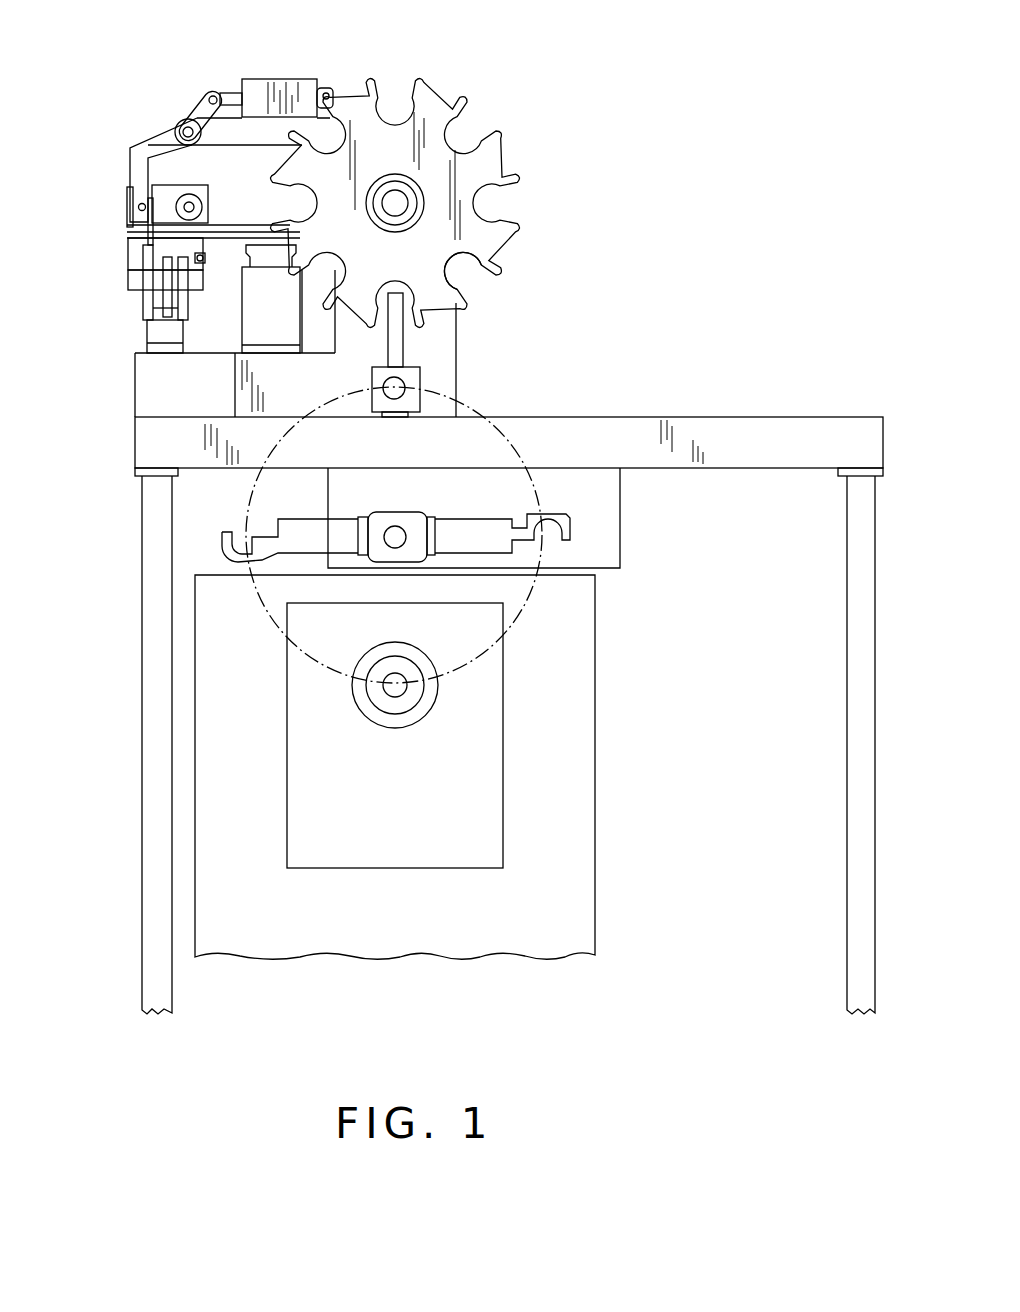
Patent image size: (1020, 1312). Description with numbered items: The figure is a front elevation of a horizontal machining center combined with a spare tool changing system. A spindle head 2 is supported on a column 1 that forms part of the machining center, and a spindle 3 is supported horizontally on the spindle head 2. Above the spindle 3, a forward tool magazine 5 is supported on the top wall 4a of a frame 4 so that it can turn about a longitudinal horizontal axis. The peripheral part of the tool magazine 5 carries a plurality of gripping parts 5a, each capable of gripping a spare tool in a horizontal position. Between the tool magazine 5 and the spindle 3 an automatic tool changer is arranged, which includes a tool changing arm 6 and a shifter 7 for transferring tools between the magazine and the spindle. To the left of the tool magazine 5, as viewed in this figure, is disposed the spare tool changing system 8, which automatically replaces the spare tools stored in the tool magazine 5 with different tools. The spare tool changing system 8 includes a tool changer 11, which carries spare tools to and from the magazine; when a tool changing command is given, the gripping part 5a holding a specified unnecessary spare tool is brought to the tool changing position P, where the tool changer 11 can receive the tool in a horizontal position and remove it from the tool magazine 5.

The column 1 is at (575, 898).
The spindle head 2 is at (400, 855).
The spindle 3 is at (398, 708).
The frame 4 is at (145, 900).
The top wall 4a is at (776, 432).
The forward tool magazine 5 is at (431, 121).
The gripping part 5a is at (500, 270).
The tool changing arm 6 is at (572, 536).
The shifter 7 is at (415, 375).
The spare tool changing system 8 is at (116, 154).
The tool changer 11 is at (127, 253).
The tool changing position P is at (278, 208).